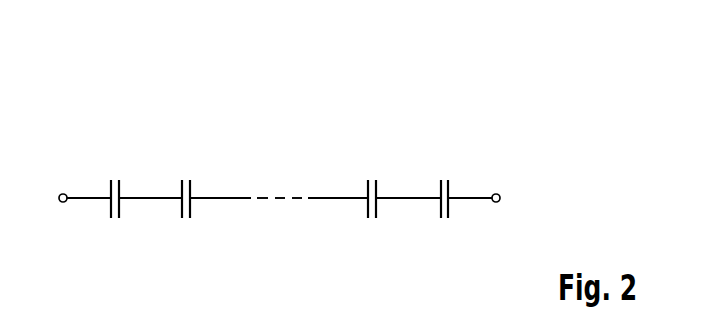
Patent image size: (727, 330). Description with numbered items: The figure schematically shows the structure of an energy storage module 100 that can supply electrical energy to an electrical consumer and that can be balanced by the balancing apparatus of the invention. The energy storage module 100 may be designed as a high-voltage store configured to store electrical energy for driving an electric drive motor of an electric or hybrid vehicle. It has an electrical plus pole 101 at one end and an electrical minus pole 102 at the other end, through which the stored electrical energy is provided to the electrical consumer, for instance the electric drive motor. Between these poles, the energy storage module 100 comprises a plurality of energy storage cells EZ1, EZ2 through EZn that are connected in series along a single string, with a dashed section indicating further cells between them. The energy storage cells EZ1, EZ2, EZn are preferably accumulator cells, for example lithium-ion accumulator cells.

The energy storage module 100 is at (481, 116).
The electrical plus pole 101 is at (60, 202).
The electrical minus pole 102 is at (498, 202).
The energy storage cell EZ1 is at (120, 186).
The energy storage cell EZ2 is at (191, 186).
The energy storage cell EZn is at (449, 189).